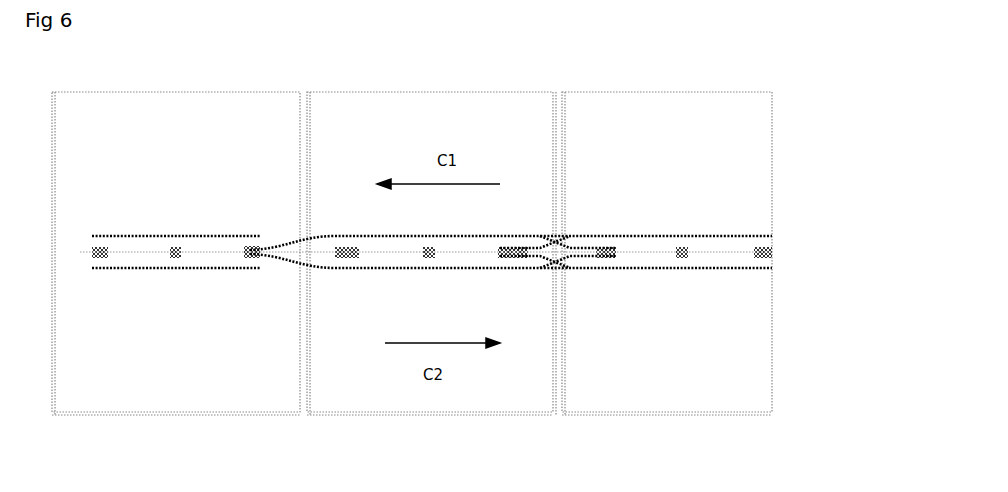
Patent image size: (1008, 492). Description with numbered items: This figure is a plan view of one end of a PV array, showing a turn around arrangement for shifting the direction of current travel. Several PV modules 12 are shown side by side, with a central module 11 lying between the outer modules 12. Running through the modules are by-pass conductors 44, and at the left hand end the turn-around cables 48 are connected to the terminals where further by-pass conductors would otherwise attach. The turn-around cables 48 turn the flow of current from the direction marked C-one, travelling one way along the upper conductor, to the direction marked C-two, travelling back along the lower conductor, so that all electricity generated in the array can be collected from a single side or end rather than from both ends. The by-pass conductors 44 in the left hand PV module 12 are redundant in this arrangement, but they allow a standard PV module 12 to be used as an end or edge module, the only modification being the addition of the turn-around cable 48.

The middle module 11 is at (427, 137).
The PV module 12 is at (207, 140).
The by-pass conductor 44 is at (144, 269).
The turn-around cable 48 is at (86, 252).